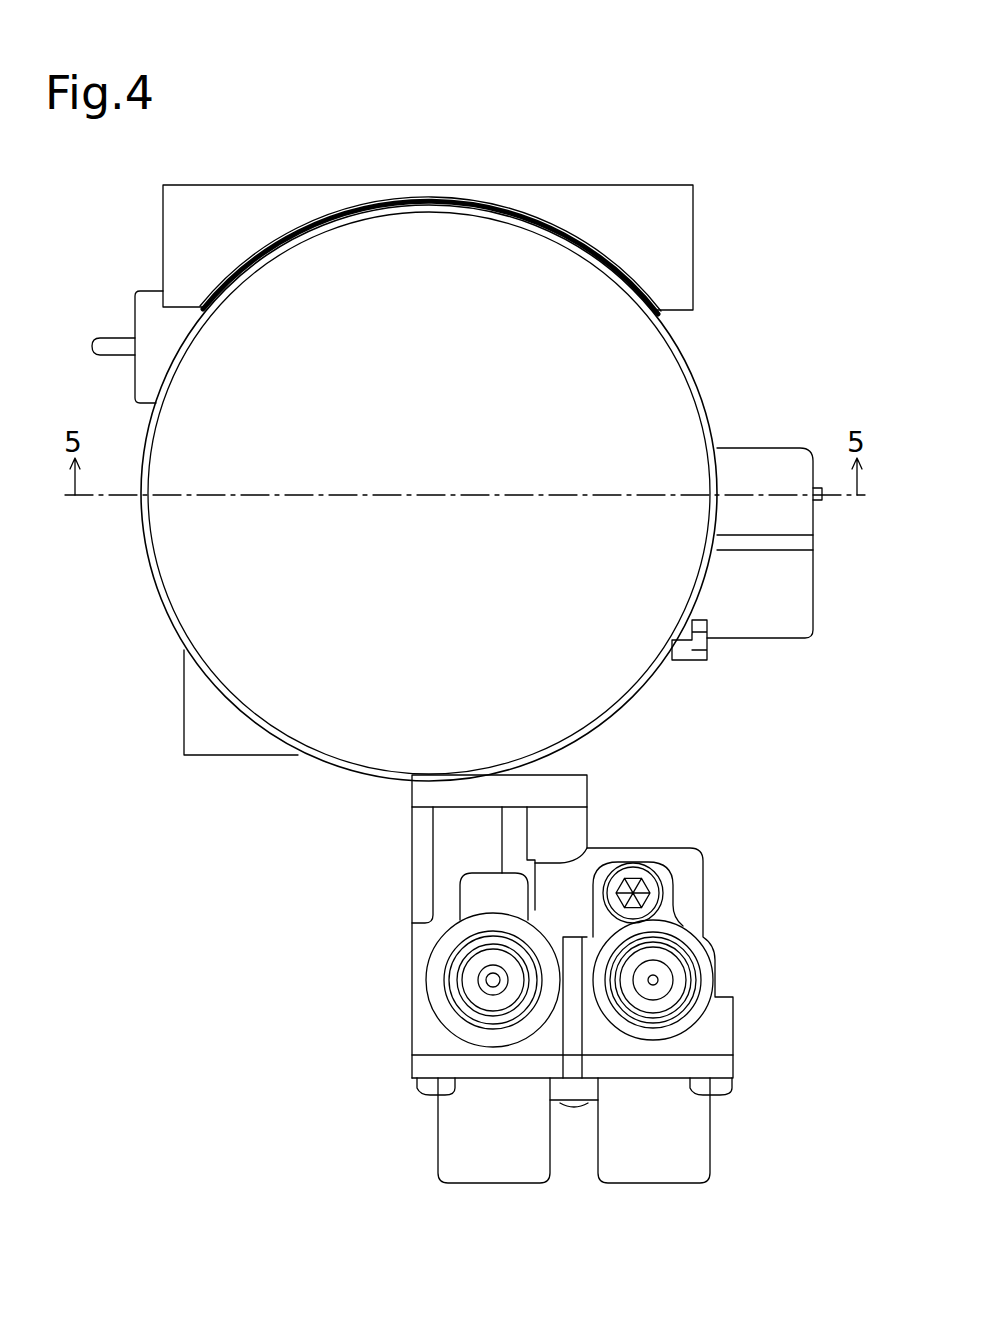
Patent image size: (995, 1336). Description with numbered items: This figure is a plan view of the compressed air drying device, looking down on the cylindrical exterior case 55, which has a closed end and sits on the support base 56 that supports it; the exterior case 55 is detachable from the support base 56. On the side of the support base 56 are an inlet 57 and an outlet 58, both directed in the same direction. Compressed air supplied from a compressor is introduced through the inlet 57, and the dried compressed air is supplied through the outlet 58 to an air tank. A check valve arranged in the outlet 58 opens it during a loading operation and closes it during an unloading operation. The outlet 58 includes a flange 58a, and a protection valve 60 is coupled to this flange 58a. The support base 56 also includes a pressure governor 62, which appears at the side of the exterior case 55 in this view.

The exterior case 55 is at (700, 387).
The support base 56 is at (695, 250).
The inlet 57 is at (258, 757).
The outlet 58 is at (412, 815).
The flange 58a is at (590, 782).
The protection valve 60 is at (735, 1020).
The pressure governor 62 is at (762, 446).